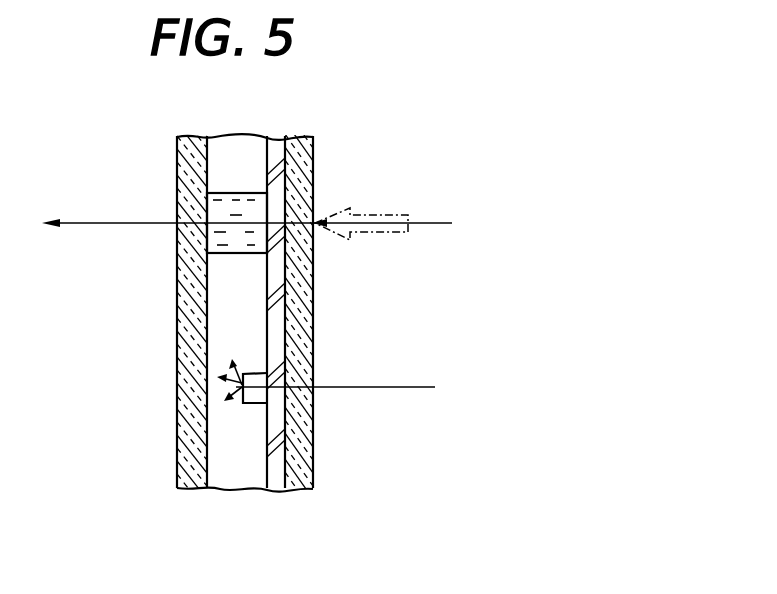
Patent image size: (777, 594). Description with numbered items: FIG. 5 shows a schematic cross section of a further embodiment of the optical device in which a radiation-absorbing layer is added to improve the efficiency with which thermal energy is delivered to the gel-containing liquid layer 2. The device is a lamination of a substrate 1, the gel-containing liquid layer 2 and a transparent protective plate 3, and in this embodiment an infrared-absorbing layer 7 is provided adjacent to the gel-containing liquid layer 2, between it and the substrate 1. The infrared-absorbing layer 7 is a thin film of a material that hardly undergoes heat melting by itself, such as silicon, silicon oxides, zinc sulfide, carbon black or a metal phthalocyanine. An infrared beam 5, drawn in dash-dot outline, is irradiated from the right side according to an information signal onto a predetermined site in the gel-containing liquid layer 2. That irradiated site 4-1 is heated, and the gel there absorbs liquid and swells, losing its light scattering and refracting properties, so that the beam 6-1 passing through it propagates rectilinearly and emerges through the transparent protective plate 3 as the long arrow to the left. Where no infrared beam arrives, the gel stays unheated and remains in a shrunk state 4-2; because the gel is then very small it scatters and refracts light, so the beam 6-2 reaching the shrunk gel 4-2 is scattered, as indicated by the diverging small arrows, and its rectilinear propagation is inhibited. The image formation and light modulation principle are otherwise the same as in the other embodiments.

The substrate 1 is at (302, 472).
The gel-containing liquid layer 2 is at (238, 471).
The transparent protective plate 3 is at (189, 471).
The infrared-absorbing layer 7 is at (273, 472).
The irradiated site 4-1 is at (238, 198).
The gel in shrunk state 4-2 is at (255, 380).
The infrared beam 5 is at (358, 210).
The beam passing through swollen gel 6-1 is at (98, 224).
The scattered beam 6-2 is at (401, 388).